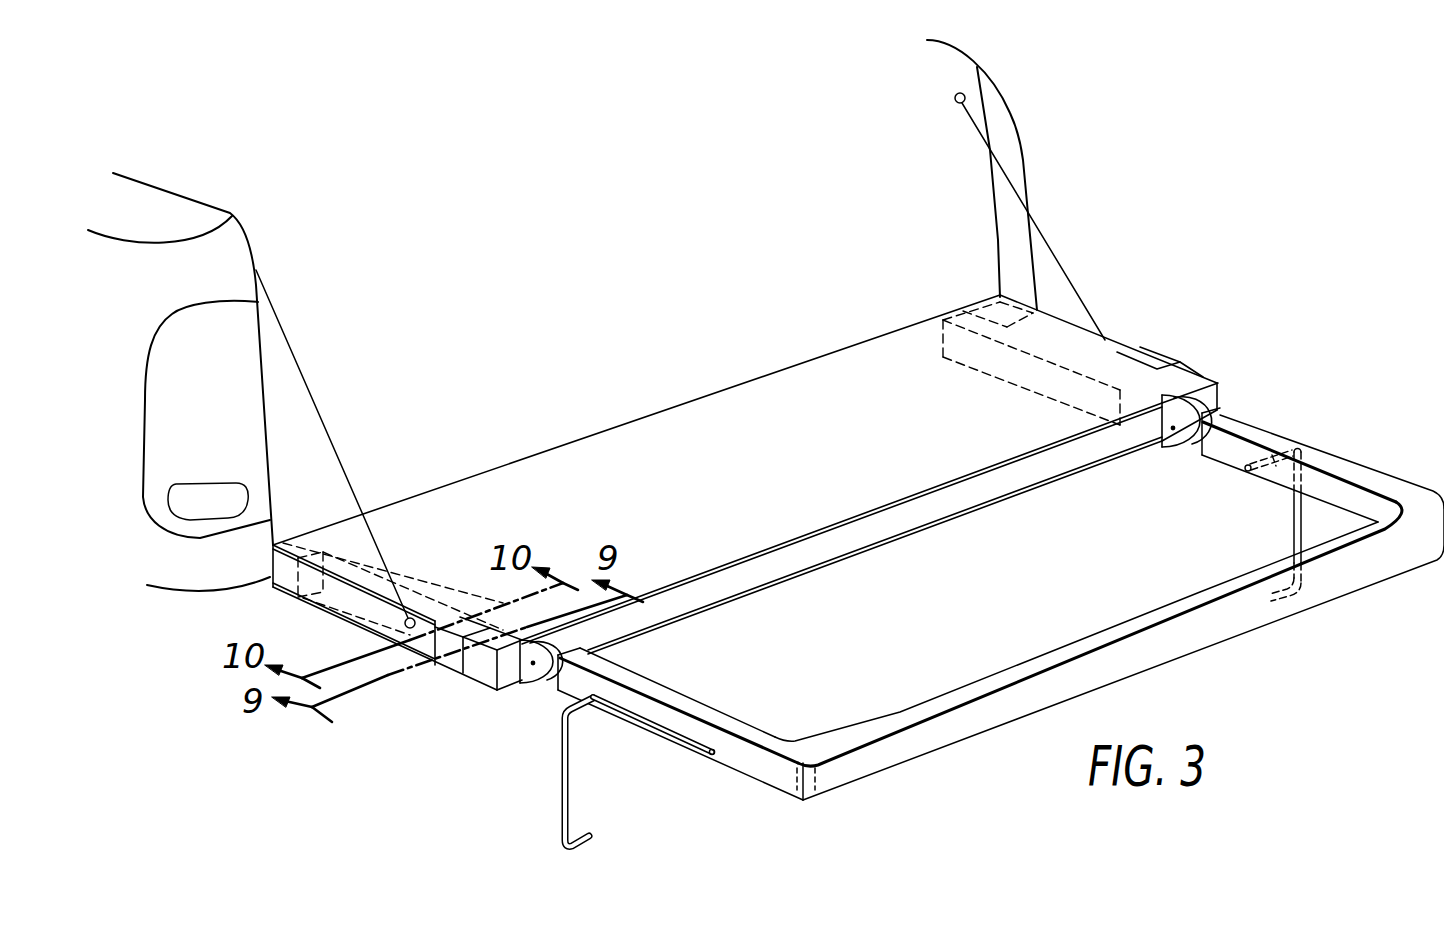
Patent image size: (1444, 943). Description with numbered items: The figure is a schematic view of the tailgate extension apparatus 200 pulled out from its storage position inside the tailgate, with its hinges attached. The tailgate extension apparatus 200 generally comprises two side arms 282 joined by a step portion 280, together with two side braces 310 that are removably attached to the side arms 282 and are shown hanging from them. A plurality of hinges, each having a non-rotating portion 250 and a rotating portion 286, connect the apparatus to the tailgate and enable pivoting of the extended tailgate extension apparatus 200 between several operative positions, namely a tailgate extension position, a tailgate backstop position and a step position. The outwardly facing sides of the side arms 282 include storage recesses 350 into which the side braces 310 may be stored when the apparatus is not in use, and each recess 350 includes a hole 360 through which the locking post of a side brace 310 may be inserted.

The tailgate extension apparatus 200 is at (1255, 410).
The non-rotating portions of hinges 250 is at (537, 677).
The step portion 280 is at (1190, 653).
The side arms 282 is at (662, 692).
The rotating portions of hinges 286 is at (553, 681).
The side braces 310 is at (563, 775).
The storage recesses 350 is at (650, 720).
The hole 360 is at (702, 753).